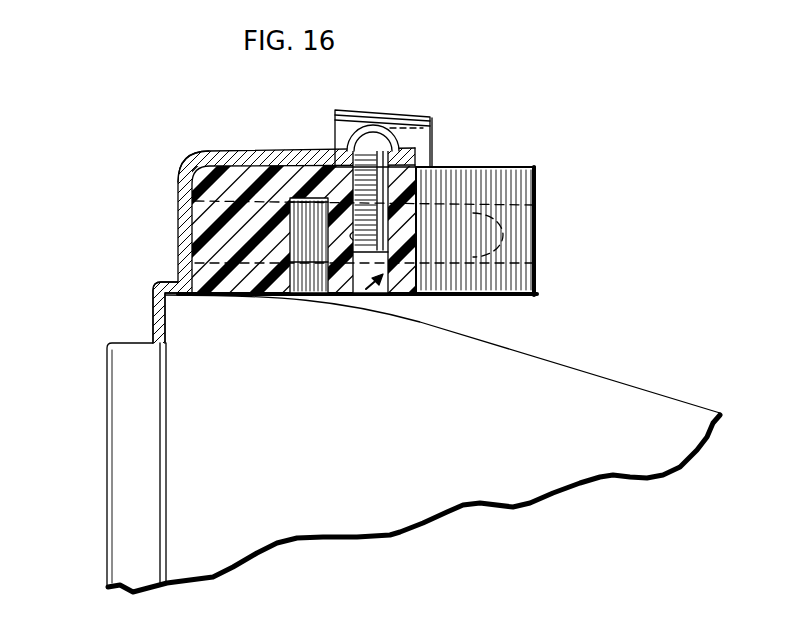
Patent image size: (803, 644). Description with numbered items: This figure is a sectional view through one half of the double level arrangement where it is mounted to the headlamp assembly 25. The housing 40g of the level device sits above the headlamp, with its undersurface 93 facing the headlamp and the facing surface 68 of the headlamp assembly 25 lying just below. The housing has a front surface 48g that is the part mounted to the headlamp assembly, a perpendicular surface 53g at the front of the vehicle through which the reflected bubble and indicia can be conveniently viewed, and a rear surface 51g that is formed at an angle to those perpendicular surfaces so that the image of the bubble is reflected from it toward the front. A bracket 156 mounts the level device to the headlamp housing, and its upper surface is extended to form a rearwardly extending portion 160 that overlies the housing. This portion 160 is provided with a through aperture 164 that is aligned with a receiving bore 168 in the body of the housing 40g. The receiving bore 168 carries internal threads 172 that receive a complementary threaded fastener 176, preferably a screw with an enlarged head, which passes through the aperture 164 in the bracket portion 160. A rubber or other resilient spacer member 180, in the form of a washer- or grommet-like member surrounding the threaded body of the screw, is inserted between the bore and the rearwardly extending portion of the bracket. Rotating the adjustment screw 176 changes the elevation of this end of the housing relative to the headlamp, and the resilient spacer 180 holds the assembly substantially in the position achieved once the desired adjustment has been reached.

The headlamp assembly 25 is at (259, 468).
The housing 40g is at (518, 168).
The front surface 48g is at (178, 213).
The rear surface 51g is at (540, 295).
The perpendicular surface 53g is at (178, 188).
The facing surface 68 is at (492, 342).
The undersurface 93 is at (414, 298).
The bracket 156 is at (155, 285).
The rearwardly extending portion 160 is at (247, 155).
The through aperture 164 is at (378, 160).
The receiving bore 168 is at (363, 297).
The internal threads 172 is at (310, 297).
The threaded fastener 176 is at (356, 123).
The resilient spacer member 180 is at (431, 158).